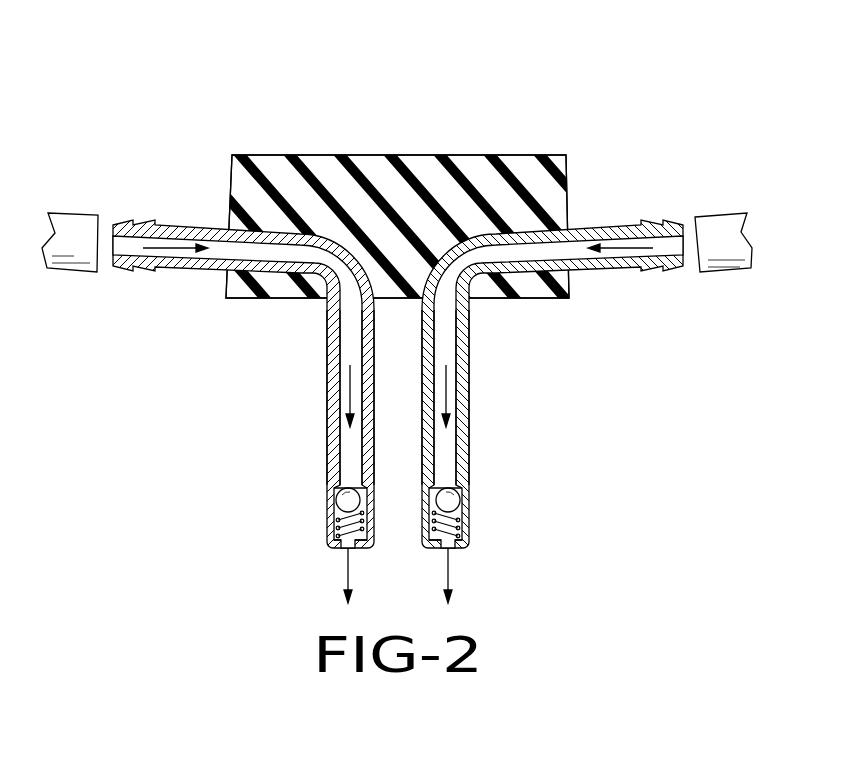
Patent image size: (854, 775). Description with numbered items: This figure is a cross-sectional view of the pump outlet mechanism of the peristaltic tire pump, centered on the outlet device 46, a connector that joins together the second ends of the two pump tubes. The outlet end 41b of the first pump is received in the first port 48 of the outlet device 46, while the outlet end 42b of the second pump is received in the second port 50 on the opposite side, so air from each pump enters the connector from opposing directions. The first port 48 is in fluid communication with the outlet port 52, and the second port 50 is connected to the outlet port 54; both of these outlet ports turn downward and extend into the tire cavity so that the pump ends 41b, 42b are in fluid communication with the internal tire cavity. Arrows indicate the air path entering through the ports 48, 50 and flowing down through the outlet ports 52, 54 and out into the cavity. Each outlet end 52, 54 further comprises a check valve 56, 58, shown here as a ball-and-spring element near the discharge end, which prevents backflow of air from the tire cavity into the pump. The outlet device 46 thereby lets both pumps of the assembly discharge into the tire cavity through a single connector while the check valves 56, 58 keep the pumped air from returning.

The outlet device 46 is at (323, 130).
The second end of first pump 41b is at (708, 214).
The second end of second pump 42b is at (80, 211).
The first port 48 is at (650, 272).
The second port 50 is at (143, 272).
The outlet port 52 is at (471, 463).
The outlet port 54 is at (327, 463).
The check valve 56 is at (458, 530).
The check valve 58 is at (340, 530).